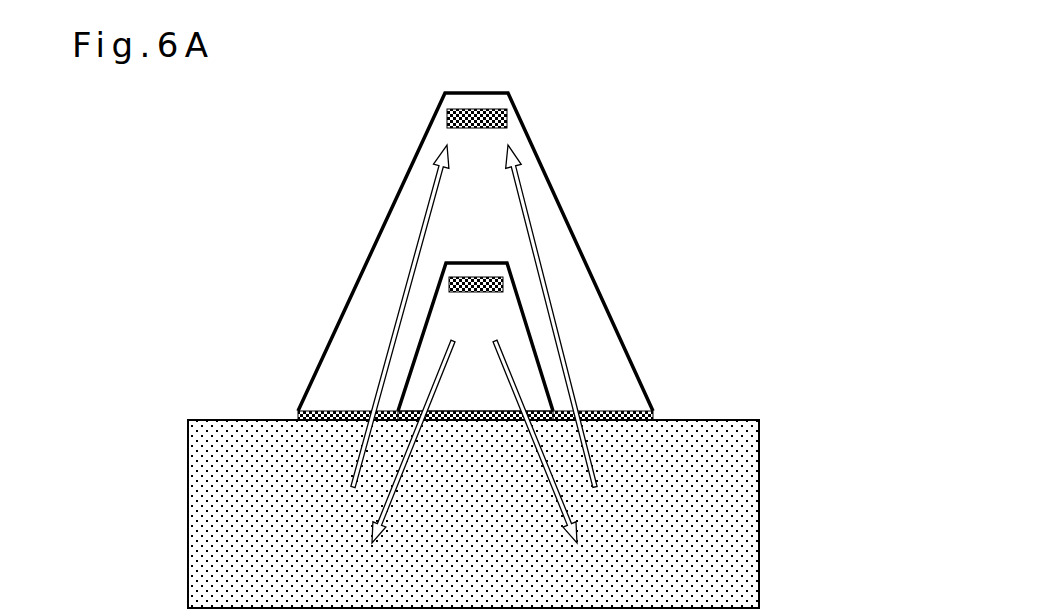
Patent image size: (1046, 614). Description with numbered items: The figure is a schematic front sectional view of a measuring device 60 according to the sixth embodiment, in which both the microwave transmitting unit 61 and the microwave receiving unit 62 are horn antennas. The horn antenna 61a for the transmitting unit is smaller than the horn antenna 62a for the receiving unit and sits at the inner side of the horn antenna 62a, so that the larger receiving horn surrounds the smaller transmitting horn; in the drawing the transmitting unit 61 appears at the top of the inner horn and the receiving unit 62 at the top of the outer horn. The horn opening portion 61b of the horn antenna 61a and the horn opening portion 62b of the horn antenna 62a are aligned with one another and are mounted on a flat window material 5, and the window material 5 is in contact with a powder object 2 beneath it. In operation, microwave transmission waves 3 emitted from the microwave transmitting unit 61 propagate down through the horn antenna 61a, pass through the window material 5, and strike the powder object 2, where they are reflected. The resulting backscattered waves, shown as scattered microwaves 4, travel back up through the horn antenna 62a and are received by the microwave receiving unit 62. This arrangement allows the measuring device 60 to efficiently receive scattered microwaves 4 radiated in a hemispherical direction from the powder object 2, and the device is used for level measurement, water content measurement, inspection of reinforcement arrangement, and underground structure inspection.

The measuring device 60 is at (245, 155).
The microwave receiving unit 62 is at (486, 108).
The horn antenna for the receiving unit 62a is at (412, 165).
The horn opening portion of the horn antenna for the receiving unit 62b is at (367, 394).
The microwave transmitting unit 61 is at (480, 277).
The horn antenna for the transmitting unit 61a is at (437, 288).
The horn opening portion of the horn antenna for the transmitting unit 61b is at (501, 394).
The scattered microwaves 4 is at (402, 308).
The microwave transmission waves 3 is at (442, 370).
The window material 5 is at (318, 426).
The powder object 2 is at (703, 420).